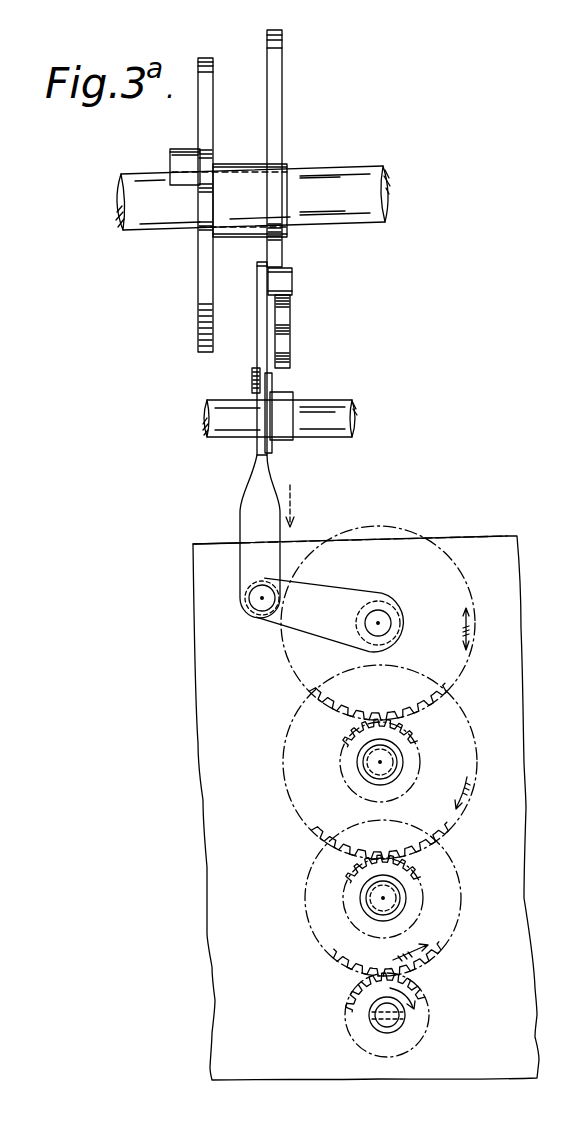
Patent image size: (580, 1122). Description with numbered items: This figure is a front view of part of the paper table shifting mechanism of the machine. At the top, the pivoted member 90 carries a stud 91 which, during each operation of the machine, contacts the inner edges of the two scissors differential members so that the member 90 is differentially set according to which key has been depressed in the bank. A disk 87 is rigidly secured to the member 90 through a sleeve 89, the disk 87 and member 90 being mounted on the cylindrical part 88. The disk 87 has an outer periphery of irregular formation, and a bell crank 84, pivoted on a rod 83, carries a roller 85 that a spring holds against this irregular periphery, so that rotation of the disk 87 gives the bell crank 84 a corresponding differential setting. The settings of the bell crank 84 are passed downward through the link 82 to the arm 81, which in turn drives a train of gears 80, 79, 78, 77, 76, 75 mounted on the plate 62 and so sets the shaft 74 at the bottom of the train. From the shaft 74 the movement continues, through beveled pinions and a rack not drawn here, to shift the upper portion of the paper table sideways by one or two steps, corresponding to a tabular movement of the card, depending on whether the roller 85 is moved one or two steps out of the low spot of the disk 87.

The mounting plate 62 is at (198, 750).
The shaft 74 is at (385, 1023).
The gear 75 is at (420, 995).
The gear 76 is at (441, 949).
The gear 77 is at (422, 882).
The gear 78 is at (468, 704).
The gear 79 is at (414, 737).
The gear 80 is at (462, 574).
The arm 81 is at (292, 623).
The link 82 is at (247, 514).
The rod 83 is at (321, 407).
The bell crank 84 is at (263, 320).
The roller 85 is at (289, 282).
The disk 87 is at (282, 108).
The roller 88 is at (338, 178).
The sleeve 89 is at (240, 168).
The pivoted member 90 is at (206, 100).
The stud 91 is at (181, 156).